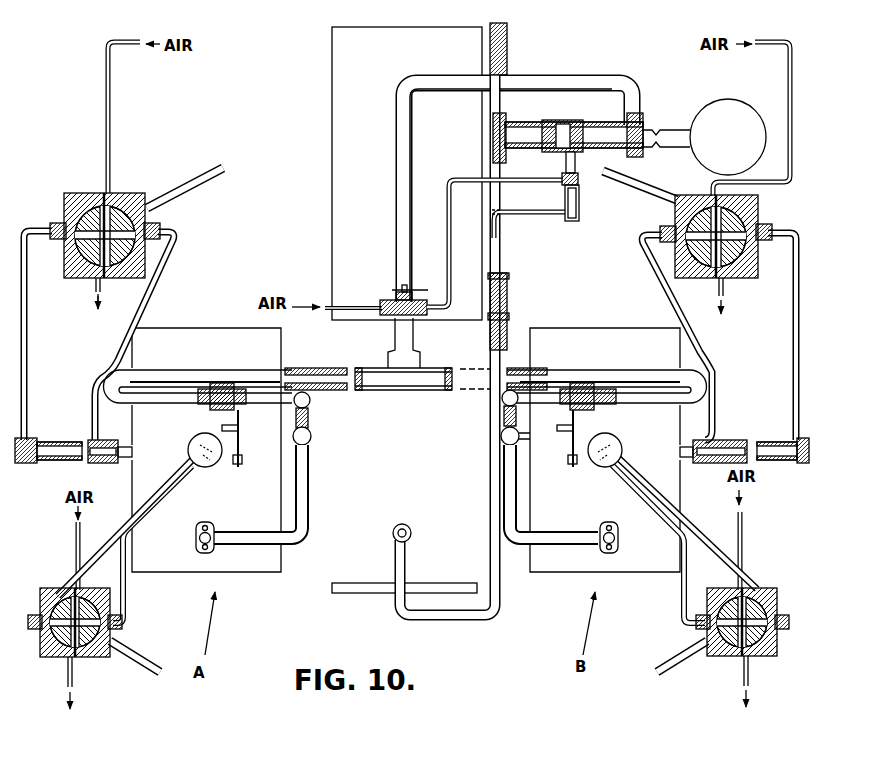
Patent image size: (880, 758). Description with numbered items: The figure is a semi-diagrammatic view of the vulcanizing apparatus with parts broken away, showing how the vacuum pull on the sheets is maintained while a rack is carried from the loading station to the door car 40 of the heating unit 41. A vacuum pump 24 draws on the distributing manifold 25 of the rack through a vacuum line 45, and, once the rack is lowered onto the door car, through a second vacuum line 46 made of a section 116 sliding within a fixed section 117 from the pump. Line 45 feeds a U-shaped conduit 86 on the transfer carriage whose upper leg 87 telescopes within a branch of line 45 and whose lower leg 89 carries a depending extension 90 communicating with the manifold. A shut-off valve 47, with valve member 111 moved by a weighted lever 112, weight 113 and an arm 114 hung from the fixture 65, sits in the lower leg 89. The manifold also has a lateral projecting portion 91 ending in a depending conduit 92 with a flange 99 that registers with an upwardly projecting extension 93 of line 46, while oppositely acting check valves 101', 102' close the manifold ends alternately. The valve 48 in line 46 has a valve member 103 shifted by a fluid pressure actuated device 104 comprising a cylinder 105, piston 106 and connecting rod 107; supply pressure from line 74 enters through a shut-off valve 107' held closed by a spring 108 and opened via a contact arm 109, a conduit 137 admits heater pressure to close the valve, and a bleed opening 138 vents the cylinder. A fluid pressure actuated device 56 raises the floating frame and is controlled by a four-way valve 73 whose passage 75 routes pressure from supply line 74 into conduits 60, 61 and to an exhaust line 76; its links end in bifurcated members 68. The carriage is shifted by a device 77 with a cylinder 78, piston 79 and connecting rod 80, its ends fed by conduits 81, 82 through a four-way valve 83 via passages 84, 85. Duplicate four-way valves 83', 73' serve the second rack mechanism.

The vacuum pump 24 is at (705, 110).
The manifold 25 is at (312, 435).
The door car 40 is at (343, 590).
The heating unit 41 is at (330, 202).
The vacuum line 45 is at (393, 148).
The second vacuum line 46 is at (508, 331).
The shut-off valve 47 is at (222, 383).
The valve 48 is at (558, 121).
The fluid pressure actuated device 56 is at (184, 450).
The supply line 60 is at (126, 603).
The conduit 61 is at (66, 577).
The inverted cup-shaped fixture 65 is at (218, 462).
The bifurcated member 68 is at (313, 366).
The four-way valve 73 is at (94, 667).
The four-way valve 73' is at (721, 647).
The fluid pressure supply line 74 is at (112, 90).
The passage 75 is at (53, 658).
The exhaust line 76 is at (96, 292).
The fluid pressure operated device 77 is at (50, 440).
The cylinder 78 is at (60, 463).
The piston 79 is at (32, 464).
The connecting rod 80 is at (122, 463).
The fluid pressure conduit 81 is at (27, 337).
The fluid pressure conduit 82 is at (97, 350).
The four-way valve 83 is at (136, 204).
The four-way valve 83' is at (705, 224).
The passage 84 is at (123, 278).
The passage 85 is at (77, 278).
The U-shaped conduit 86 is at (119, 362).
The upper leg 87 is at (147, 372).
The lower leg 89 is at (177, 402).
The depending extension 90 is at (313, 396).
The lateral projecting portion 91 is at (306, 512).
The depending conduit 92 is at (208, 526).
The upwardly projecting extension 93 is at (410, 528).
The flange 99 is at (194, 535).
The check valve 101' is at (333, 487).
The check valve 102' is at (406, 417).
The valve member 103 is at (566, 130).
The fluid pressure actuated device 104 is at (582, 208).
The cylinder 105 is at (573, 222).
The piston 106 is at (580, 194).
The connecting rod 107 is at (606, 162).
The shut-off valve 107' is at (383, 294).
The spring 108 is at (409, 299).
The contact arm 109 is at (395, 288).
The valve member 111 is at (227, 392).
The lever 112 is at (239, 433).
The weight 113 is at (242, 463).
The arm 114 is at (222, 426).
The section 116 is at (497, 422).
The fixed section 117 is at (501, 266).
The conduit 137 is at (496, 228).
The bleed opening 138 is at (552, 188).